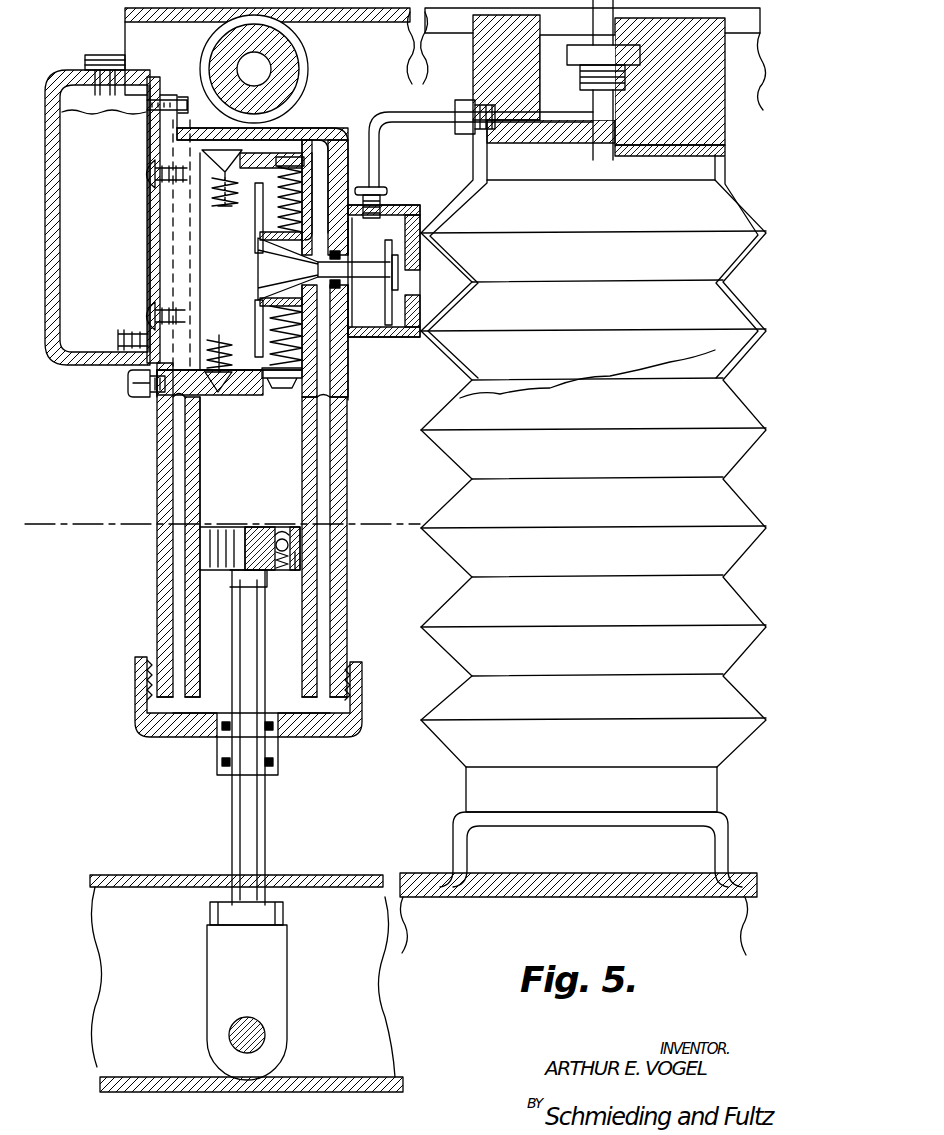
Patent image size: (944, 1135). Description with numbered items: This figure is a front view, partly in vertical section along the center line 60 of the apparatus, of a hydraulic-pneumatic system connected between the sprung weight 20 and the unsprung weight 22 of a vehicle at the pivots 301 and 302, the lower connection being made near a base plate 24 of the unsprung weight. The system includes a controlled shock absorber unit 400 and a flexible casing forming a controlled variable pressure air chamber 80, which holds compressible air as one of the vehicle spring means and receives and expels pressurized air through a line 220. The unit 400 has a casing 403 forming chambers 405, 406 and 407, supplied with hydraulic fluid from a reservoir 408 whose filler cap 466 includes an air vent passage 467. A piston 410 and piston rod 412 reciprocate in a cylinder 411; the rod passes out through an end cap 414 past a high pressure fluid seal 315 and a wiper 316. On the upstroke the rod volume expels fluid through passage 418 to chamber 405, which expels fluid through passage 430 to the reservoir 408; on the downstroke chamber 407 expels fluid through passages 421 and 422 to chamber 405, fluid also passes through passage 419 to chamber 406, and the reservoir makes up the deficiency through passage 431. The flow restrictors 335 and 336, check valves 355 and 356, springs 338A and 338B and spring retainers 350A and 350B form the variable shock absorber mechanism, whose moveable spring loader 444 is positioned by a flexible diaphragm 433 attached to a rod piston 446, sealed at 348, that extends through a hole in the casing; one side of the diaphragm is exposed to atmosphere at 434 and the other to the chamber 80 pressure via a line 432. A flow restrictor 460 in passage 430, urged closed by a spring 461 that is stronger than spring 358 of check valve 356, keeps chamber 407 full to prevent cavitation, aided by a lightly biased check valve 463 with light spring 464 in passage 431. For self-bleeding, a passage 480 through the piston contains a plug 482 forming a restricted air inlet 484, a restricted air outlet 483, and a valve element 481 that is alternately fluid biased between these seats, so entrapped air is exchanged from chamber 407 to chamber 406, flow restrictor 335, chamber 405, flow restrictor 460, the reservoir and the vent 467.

The sprung weight 20 is at (388, 26).
The unsprung weight 22 is at (152, 1008).
The base plate 24 is at (132, 1085).
The section line 60 is at (66, 526).
The controlled variable pressure air chamber 80 is at (705, 215).
The line 220 is at (670, 45).
The pivot 301 is at (225, 48).
The pivot 302 is at (247, 1050).
The high pressure fluid seal 315 is at (222, 728).
The wiper 316 is at (222, 765).
The flow restrictor 335 is at (285, 388).
The flow restrictor 336 is at (290, 160).
The spring 338A is at (222, 200).
The spring 338B is at (262, 312).
The seal 348 is at (340, 250).
The spring retainer 350A is at (258, 240).
The spring retainer 350B is at (300, 385).
The check valve 355 is at (165, 400).
The check valve 356 is at (200, 112).
The spring 358 is at (232, 345).
The controlled shock absorber unit 400 is at (300, 120).
The casing 403 is at (340, 330).
The chamber 405 is at (160, 240).
The chamber 406 is at (195, 465).
The lower chamber 407 is at (190, 598).
The reservoir 408 is at (75, 340).
The piston 410 is at (210, 548).
The cylinder 411 is at (312, 478).
The piston rod 412 is at (242, 830).
The end cap 414 is at (345, 738).
The passage 418 is at (240, 393).
The passage 419 is at (228, 392).
The passage 421 is at (320, 582).
The passage 422 is at (374, 186).
The passage 430 is at (150, 205).
The passage 431 is at (150, 282).
The line 432 is at (378, 148).
The flexible diaphragm 433 is at (388, 325).
The atmosphere exposure 434 is at (412, 275).
The moveable spring loader 444 is at (258, 266).
The rod piston 446 is at (395, 290).
The flow restrictor 460 is at (143, 172).
The spring 461 is at (181, 170).
The check valve 463 is at (178, 318).
The light spring 464 is at (120, 340).
The filler cap 466 is at (110, 55).
The air vent passage 467 is at (85, 62).
The passage 480 is at (290, 545).
The valve element 481 is at (262, 532).
The plug 482 is at (296, 570).
The restricted air outlet 483 is at (283, 535).
The restricted air inlet 484 is at (282, 570).